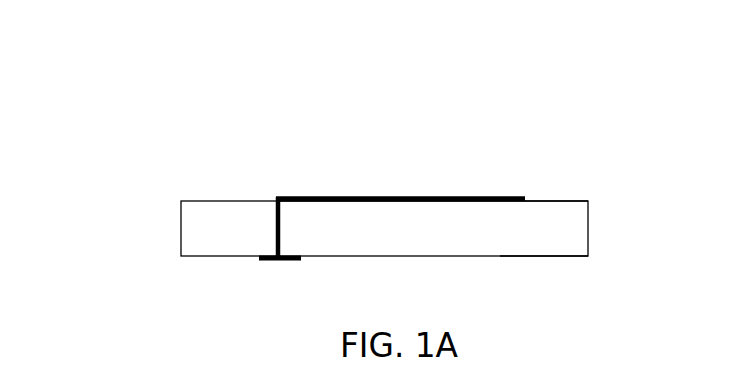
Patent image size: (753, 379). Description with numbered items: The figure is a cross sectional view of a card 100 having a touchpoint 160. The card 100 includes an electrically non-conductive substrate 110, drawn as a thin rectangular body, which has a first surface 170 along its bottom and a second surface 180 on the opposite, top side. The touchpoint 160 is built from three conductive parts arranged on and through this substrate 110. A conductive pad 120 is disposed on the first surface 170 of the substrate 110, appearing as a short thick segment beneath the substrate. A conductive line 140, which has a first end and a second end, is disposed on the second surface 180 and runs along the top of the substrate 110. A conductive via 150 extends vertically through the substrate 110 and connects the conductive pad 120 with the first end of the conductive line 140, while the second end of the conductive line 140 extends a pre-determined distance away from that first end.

The card 100 is at (104, 50).
The electrically non-conductive substrate 110 is at (560, 233).
The conductive pad 120 is at (270, 258).
The conductive line 140 is at (447, 200).
The conductive via 150 is at (280, 230).
The touchpoint 160 is at (367, 175).
The first surface 170 is at (562, 258).
The second surface 180 is at (573, 200).